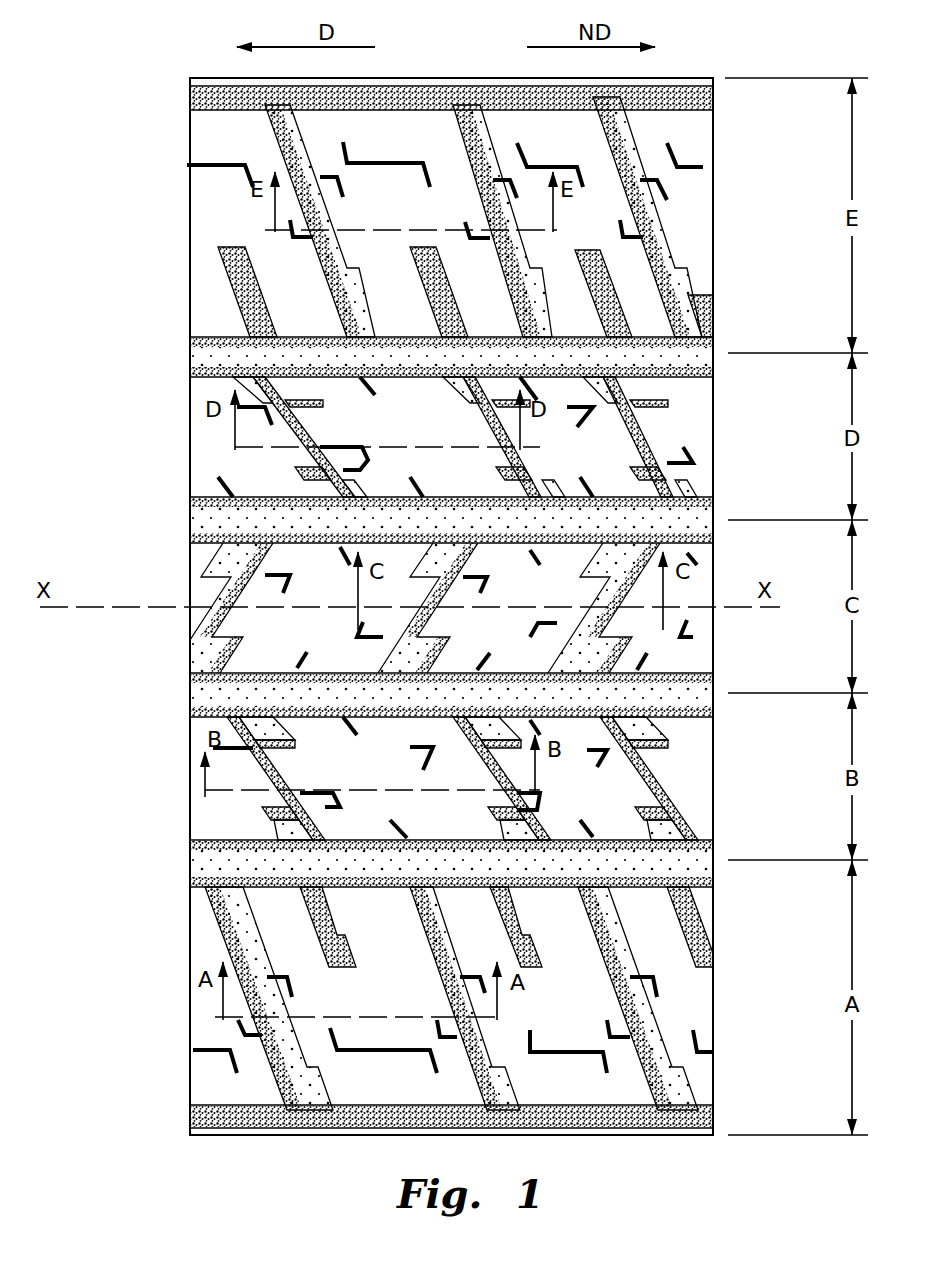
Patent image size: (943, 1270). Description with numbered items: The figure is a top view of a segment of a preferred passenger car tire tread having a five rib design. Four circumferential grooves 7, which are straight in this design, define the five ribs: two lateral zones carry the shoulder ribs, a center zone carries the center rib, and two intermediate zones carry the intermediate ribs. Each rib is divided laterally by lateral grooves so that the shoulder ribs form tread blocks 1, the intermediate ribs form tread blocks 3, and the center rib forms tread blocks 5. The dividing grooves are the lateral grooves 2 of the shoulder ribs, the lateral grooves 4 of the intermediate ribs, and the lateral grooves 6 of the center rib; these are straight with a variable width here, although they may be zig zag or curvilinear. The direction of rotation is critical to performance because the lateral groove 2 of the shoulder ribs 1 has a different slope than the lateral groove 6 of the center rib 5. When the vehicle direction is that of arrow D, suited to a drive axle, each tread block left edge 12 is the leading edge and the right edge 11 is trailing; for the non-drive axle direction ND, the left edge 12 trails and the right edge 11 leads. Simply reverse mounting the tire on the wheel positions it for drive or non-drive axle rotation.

The shoulder rib tread block 1 is at (705, 219).
The lateral groove of the shoulder rib 2 is at (683, 297).
The intermediate rib tread block 3 is at (703, 415).
The lateral groove of the intermediate rib 4 is at (652, 485).
The center rib tread block 5 is at (699, 592).
The lateral groove of the center rib 6 is at (594, 623).
The circumferential groove 7 is at (214, 354).
The tread block right edge 11 is at (478, 799).
The tread block left edge 12 is at (289, 778).